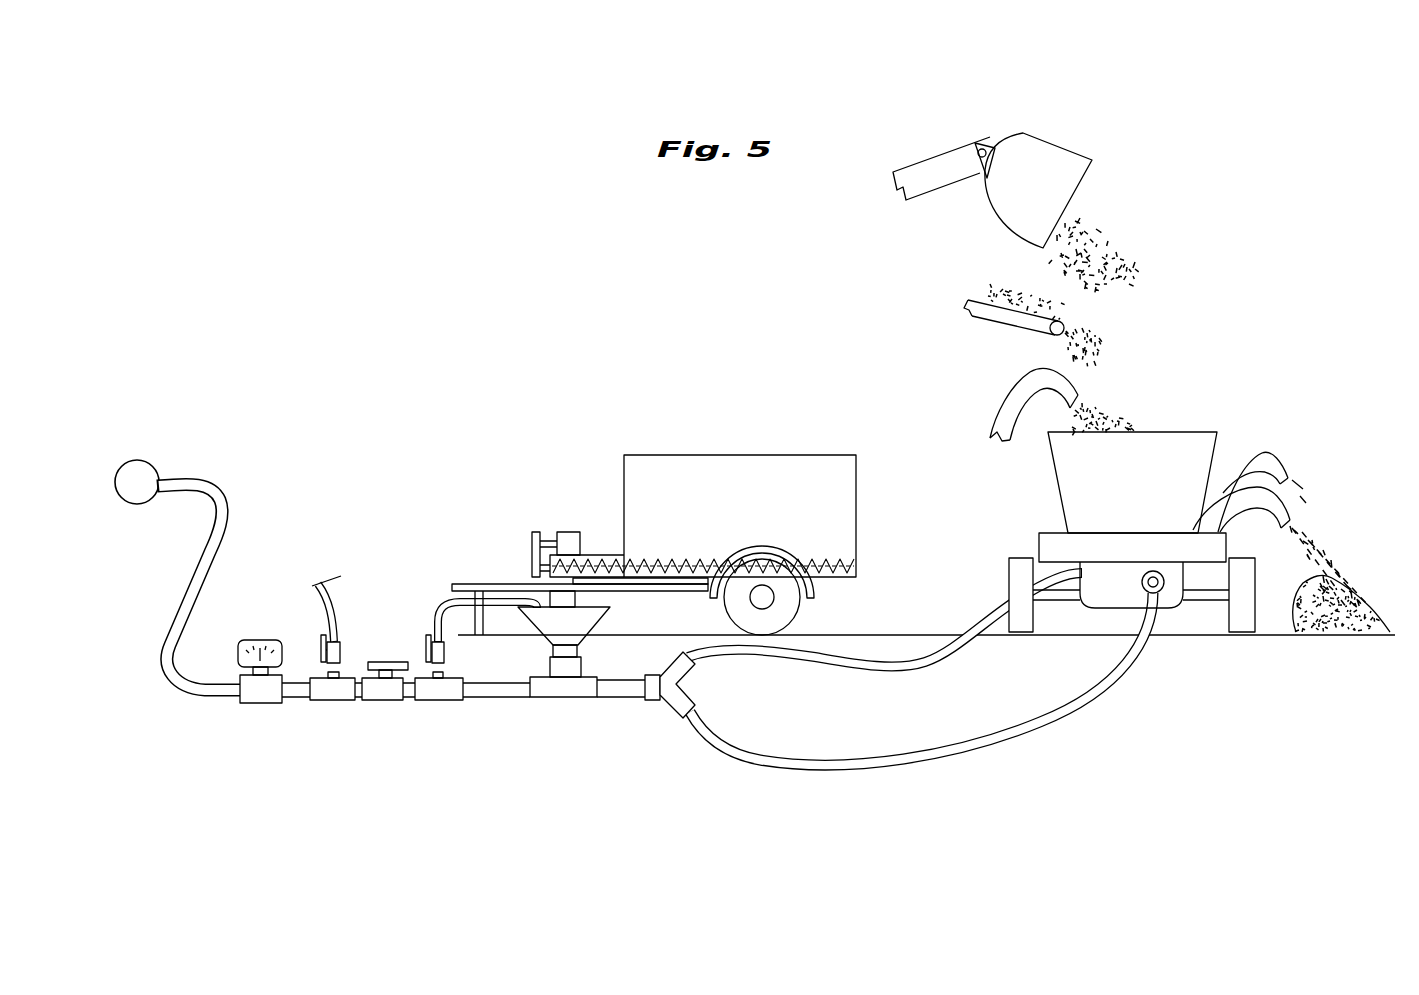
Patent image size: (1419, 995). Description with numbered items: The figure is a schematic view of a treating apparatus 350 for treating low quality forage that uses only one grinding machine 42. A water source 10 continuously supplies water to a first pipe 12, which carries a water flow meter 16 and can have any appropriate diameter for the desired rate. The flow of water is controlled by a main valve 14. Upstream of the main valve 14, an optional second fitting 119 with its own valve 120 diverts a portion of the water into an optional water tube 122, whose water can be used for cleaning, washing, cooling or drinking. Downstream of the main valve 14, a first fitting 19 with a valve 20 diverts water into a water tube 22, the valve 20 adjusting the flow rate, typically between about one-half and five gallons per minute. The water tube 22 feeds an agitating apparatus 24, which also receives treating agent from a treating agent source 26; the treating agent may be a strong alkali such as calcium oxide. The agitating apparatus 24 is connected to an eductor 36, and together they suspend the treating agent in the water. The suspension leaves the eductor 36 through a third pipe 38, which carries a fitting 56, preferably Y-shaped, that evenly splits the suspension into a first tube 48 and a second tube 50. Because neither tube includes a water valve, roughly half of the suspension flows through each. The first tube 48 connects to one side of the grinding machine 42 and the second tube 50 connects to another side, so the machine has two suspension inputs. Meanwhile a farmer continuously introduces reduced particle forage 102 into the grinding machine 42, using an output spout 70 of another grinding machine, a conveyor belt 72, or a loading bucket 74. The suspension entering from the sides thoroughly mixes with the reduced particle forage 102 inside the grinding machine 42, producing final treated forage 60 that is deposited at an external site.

The treating apparatus 350 is at (795, 369).
The water source 10 is at (140, 472).
The first pipe 12 is at (182, 672).
The water flow meter 16 is at (238, 643).
The second fitting 119 is at (342, 700).
The valve 120 is at (318, 640).
The water tube 122 is at (321, 592).
The main valve 14 is at (397, 660).
The first fitting 19 is at (440, 700).
The valve 20 is at (428, 636).
The water tube 22 is at (446, 603).
The agitating apparatus 24 is at (555, 636).
The treating agent source 26 is at (735, 455).
The eductor 36 is at (557, 693).
The third pipe 38 is at (622, 693).
The fitting 56 is at (676, 707).
The second tube 50 is at (935, 660).
The first tube 48 is at (1100, 693).
The grinding machine 42 is at (1210, 457).
The final treated forage 60 is at (1293, 613).
The output spout 70 is at (1012, 388).
The conveyor belt 72 is at (985, 313).
The loading bucket 74 is at (1082, 155).
The reduced particle forage 102 is at (1088, 230).